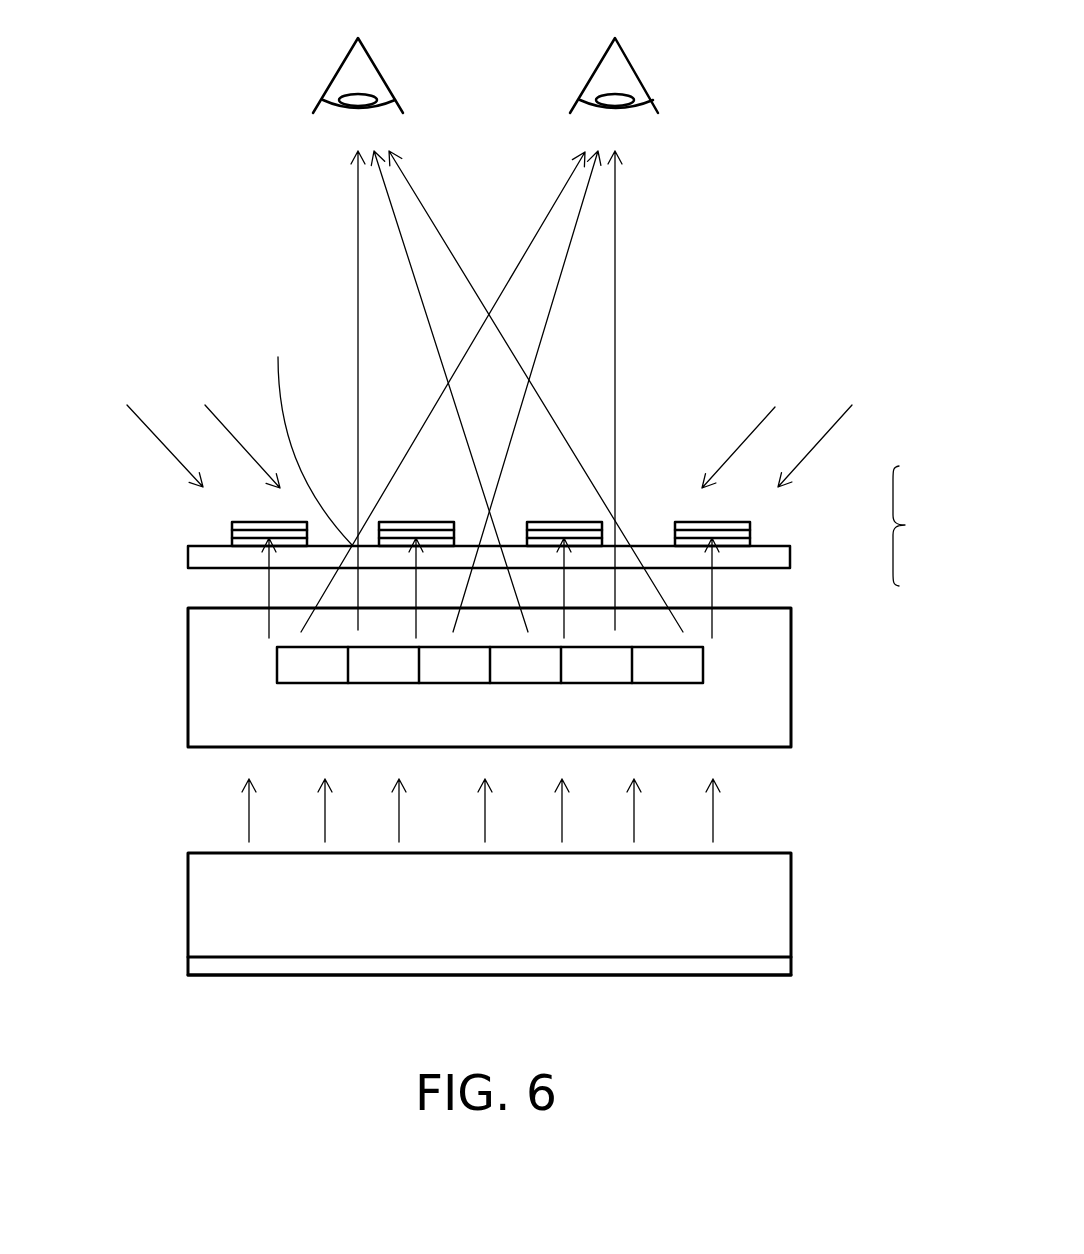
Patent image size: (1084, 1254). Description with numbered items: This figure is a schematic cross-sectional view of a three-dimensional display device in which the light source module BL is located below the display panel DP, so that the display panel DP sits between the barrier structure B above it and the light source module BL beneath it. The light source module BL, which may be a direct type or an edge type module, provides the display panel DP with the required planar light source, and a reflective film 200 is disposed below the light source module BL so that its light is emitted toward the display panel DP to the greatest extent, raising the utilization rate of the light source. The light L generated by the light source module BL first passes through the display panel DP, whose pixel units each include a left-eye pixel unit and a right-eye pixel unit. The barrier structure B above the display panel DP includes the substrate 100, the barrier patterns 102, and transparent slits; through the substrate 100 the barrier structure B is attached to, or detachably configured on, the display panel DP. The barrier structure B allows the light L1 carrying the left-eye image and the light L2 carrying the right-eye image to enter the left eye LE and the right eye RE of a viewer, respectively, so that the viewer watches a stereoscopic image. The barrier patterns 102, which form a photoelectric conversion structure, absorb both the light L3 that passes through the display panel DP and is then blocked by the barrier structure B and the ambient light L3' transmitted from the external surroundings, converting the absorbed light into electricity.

The right eye RE is at (358, 56).
The left eye LE is at (614, 56).
The light (left-eye image) L1 is at (307, 429).
The light (right-eye image) L2 is at (358, 322).
The light L3 is at (434, 588).
The ambient light L3' is at (489, 435).
The substrate 100 is at (778, 560).
The barrier patterns 102 is at (750, 523).
The barrier structure B is at (912, 526).
The display panel DP is at (782, 679).
The light L is at (713, 822).
The light source module BL is at (780, 909).
The reflective film 200 is at (780, 965).